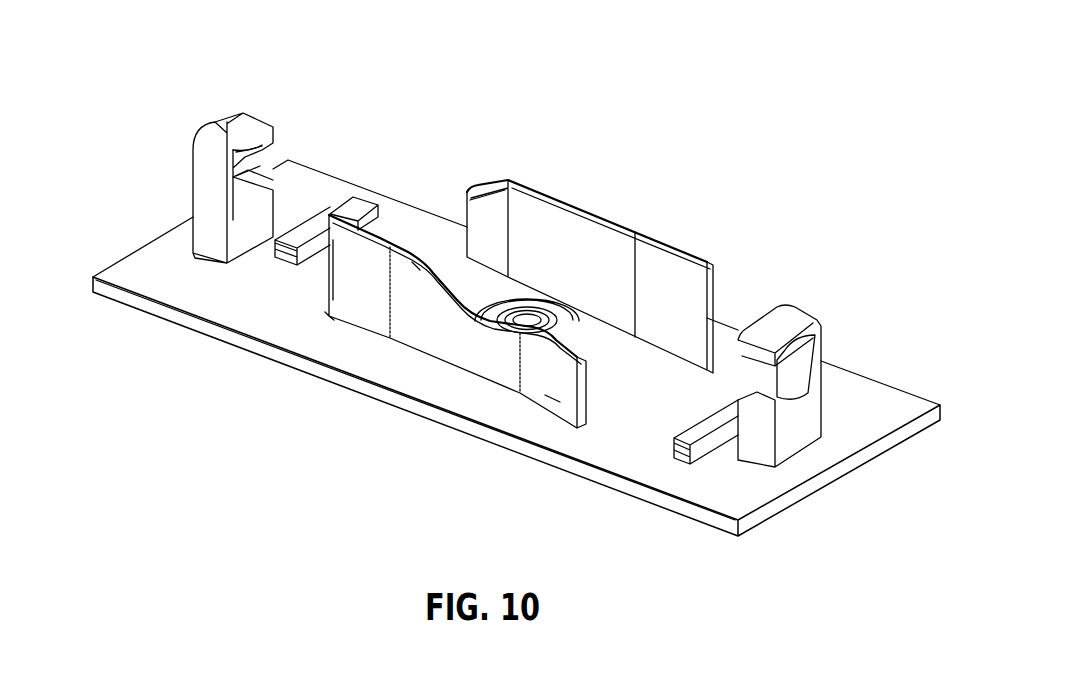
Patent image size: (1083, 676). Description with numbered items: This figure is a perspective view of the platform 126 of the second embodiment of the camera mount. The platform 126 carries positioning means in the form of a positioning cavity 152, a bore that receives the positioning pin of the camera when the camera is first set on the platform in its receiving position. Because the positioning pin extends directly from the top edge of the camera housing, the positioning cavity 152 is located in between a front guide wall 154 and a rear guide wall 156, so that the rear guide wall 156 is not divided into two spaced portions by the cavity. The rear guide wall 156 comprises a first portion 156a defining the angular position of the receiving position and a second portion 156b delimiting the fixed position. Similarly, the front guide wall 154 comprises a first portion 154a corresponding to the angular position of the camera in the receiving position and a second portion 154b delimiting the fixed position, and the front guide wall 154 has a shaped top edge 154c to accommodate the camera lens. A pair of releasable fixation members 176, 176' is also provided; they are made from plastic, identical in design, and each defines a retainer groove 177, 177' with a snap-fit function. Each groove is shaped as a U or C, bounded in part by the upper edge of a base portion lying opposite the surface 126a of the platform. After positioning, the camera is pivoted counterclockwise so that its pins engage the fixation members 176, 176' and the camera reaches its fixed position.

The platform 126 is at (820, 170).
The surface of the platform 126a is at (143, 277).
The positioning cavity 152 is at (496, 306).
The front guide wall 154 is at (399, 368).
The first portion of the front guide wall 154a is at (540, 393).
The second portion of the front guide wall 154b is at (347, 287).
The shaped top edge 154c is at (407, 275).
The rear guide wall 156 is at (614, 251).
The first portion of the rear guide wall 156a is at (508, 182).
The second portion of the rear guide wall 156b is at (664, 267).
The releasable fixation member 176 is at (216, 137).
The releasable fixation member 176' is at (805, 353).
The retainer groove 177 is at (288, 113).
The retainer groove 177' is at (881, 367).